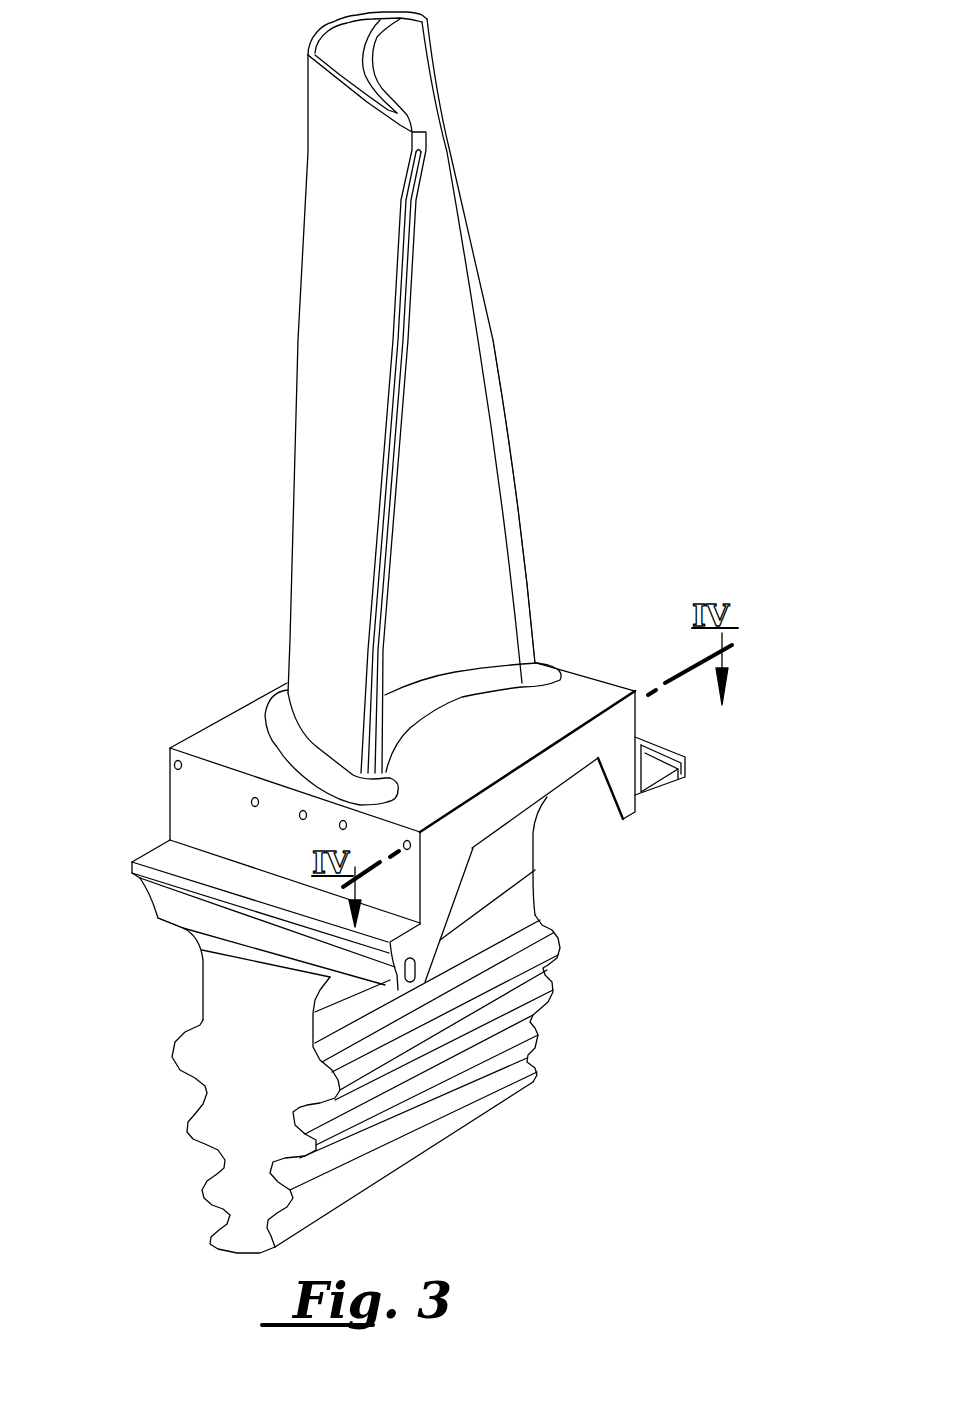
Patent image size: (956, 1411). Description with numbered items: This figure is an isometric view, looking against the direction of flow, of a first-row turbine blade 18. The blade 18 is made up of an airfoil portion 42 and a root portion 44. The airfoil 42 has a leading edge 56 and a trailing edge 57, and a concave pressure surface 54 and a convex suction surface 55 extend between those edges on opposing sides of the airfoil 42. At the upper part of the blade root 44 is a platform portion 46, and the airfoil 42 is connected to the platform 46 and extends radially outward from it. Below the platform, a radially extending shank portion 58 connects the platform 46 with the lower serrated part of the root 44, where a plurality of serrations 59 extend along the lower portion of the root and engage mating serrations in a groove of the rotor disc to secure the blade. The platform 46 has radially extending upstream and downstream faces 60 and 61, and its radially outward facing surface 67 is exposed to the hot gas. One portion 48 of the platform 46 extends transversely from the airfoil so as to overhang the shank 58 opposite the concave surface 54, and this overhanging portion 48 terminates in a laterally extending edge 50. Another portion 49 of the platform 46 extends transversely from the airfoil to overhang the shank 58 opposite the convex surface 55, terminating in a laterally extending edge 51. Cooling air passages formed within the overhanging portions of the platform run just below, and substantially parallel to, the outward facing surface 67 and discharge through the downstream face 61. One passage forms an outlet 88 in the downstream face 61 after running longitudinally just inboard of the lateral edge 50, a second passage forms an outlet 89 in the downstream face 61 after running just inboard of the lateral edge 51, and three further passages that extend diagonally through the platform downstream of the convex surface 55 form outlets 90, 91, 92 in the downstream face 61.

The row one turbine blade 18 is at (411, 408).
The airfoil portion 42 is at (510, 428).
The root portion 44 is at (386, 1083).
The platform portion 46 is at (175, 803).
The overhanging portion 48 is at (533, 838).
The overhanging portion 49 is at (385, 793).
The lateral edge 50 is at (545, 770).
The lateral edge 51 is at (257, 687).
The concave pressure surface 54 is at (462, 563).
The convex suction surface 55 is at (317, 447).
The leading edge 56 is at (478, 263).
The trailing edge 57 is at (405, 360).
The shank portion 58 is at (203, 983).
The serrations 59 is at (172, 1060).
The upstream face 60 is at (637, 728).
The downstream face 61 is at (178, 833).
The radially outward facing platform surface 67 is at (580, 697).
The outlet 88 is at (415, 838).
The outlet 89 is at (172, 763).
The outlet 90 is at (340, 828).
The outlet 91 is at (299, 817).
The outlet 92 is at (252, 800).